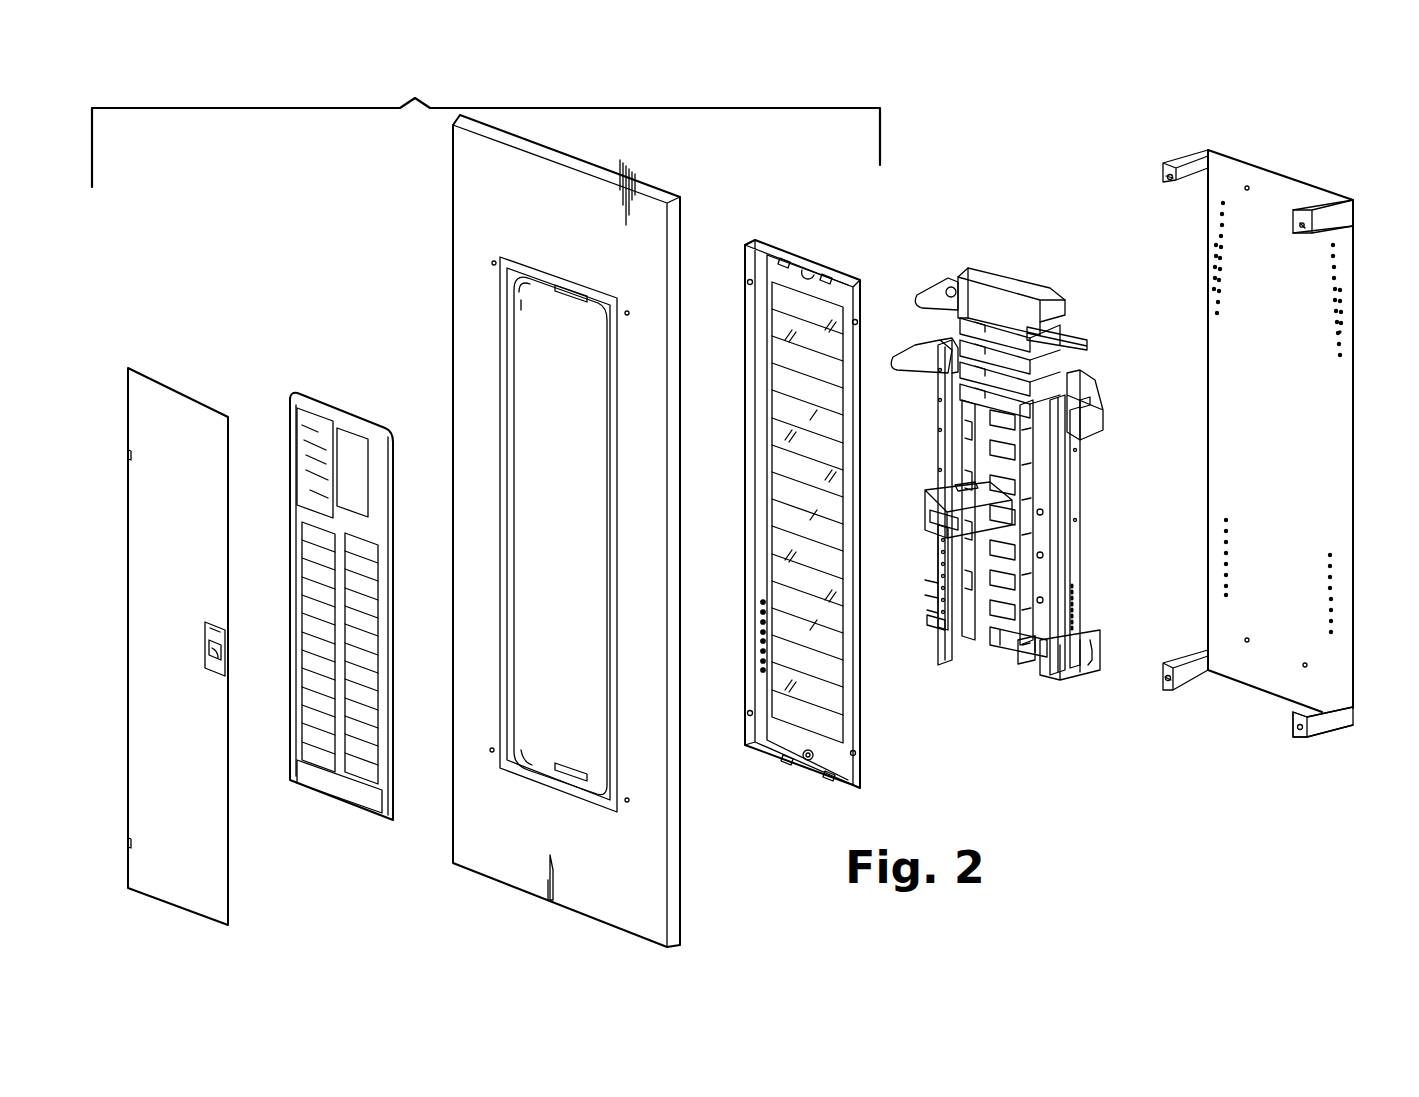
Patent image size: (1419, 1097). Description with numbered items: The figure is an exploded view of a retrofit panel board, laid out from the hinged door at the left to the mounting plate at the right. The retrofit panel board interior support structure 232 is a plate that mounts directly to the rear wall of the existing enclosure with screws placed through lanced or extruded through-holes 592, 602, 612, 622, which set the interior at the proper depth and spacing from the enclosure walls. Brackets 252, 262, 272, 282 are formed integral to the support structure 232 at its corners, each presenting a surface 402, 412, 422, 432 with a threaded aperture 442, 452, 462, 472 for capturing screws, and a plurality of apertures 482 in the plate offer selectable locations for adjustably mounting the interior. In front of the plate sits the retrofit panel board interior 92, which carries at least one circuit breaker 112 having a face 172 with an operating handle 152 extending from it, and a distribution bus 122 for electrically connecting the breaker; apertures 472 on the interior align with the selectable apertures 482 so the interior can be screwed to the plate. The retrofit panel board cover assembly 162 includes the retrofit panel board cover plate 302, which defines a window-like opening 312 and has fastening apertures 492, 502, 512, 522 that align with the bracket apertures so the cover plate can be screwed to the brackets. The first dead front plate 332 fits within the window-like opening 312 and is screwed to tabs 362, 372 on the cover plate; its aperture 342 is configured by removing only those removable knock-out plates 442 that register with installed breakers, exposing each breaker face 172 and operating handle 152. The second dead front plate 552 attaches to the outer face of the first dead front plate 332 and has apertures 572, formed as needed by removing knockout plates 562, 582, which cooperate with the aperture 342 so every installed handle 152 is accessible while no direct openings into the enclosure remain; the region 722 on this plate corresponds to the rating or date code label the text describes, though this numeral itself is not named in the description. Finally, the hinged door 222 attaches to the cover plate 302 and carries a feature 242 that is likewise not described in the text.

The retrofit panel board cover assembly 162 is at (486, 130).
The hinged door 222 is at (160, 420).
The door latch 242 is at (195, 650).
The second dead front plate 552 is at (356, 422).
The knockout plate 562 is at (355, 492).
The aperture 572 is at (313, 640).
The knockout plate 582 is at (360, 622).
The label area 722 is at (355, 800).
The retrofit panel board cover plate 302 is at (585, 212).
The window-like opening 312 is at (565, 400).
The tab 362 is at (570, 298).
The tab 372 is at (570, 770).
The aperture 502 is at (492, 263).
The aperture 492 is at (629, 313).
The aperture 512 is at (490, 752).
The aperture 522 is at (629, 800).
The first dead front plate 332 is at (764, 292).
The removable plate 442 is at (835, 690).
The aperture 342 is at (795, 630).
The retrofit panel board interior 92 is at (978, 282).
The aperture 472 is at (953, 282).
The circuit breaker 112 is at (935, 495).
The face 172 is at (940, 513).
The operating handle 152 is at (945, 537).
The distribution bus 122 is at (1030, 655).
The retrofit panel board interior support structure 232 is at (1357, 425).
The bracket 262 is at (1193, 158).
The threaded aperture 452 is at (1167, 172).
The surface 412 is at (1170, 182).
The through-hole 602 is at (1247, 186).
The bracket 252 is at (1338, 226).
The through-hole 592 is at (1303, 212).
The surface 402 is at (1307, 236).
The aperture 482 is at (1340, 330).
The through-hole 612 is at (1245, 638).
The through-hole 622 is at (1307, 665).
The bracket 272 is at (1190, 680).
The threaded aperture 462 is at (1166, 676).
The surface 422 is at (1168, 684).
The bracket 282 is at (1330, 725).
The threaded aperture 432 is at (1308, 738).